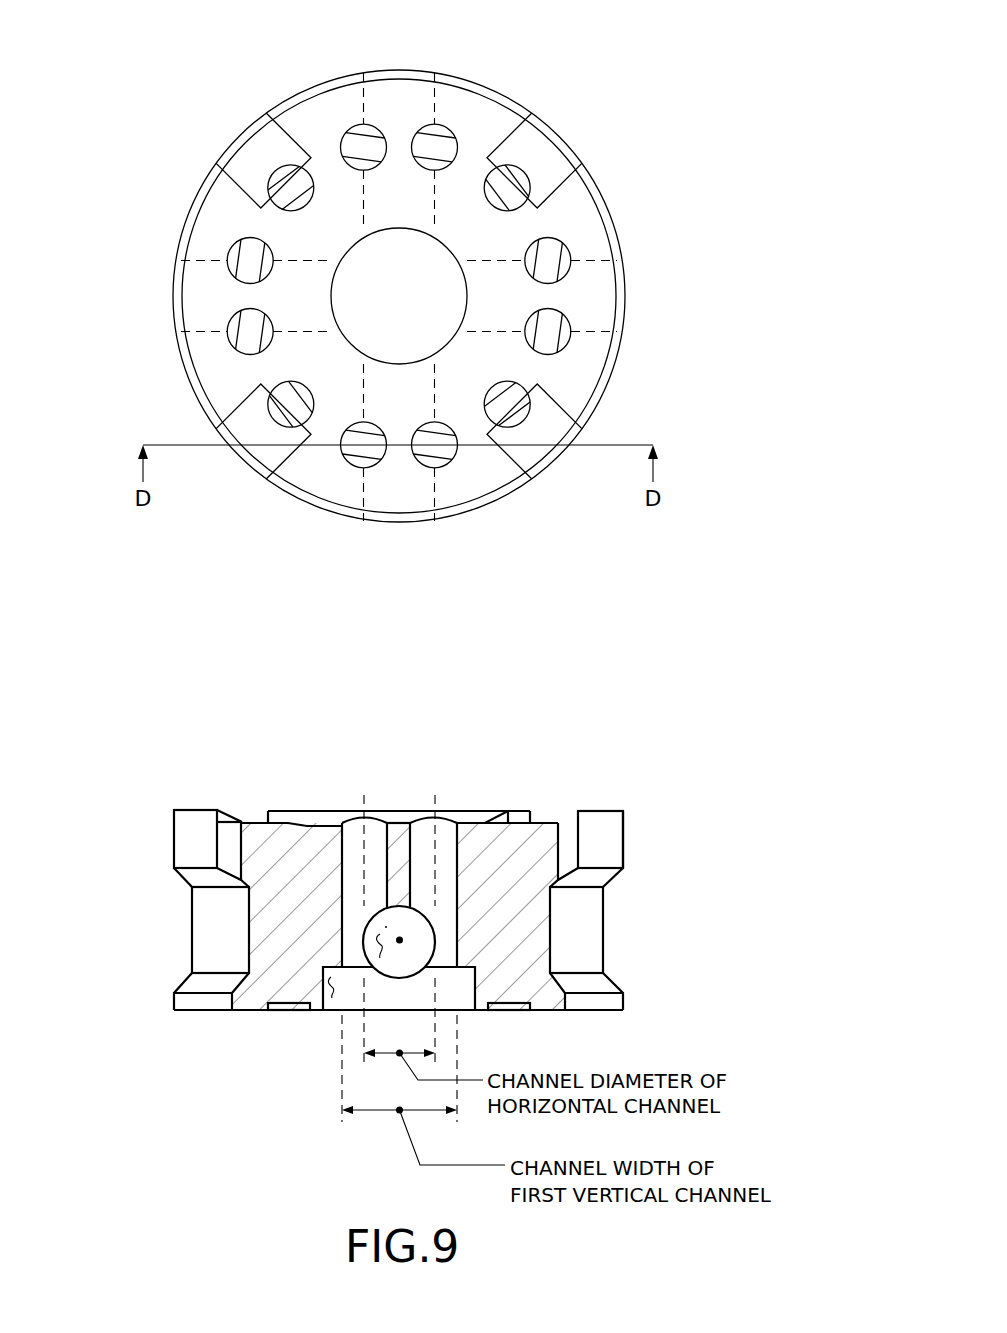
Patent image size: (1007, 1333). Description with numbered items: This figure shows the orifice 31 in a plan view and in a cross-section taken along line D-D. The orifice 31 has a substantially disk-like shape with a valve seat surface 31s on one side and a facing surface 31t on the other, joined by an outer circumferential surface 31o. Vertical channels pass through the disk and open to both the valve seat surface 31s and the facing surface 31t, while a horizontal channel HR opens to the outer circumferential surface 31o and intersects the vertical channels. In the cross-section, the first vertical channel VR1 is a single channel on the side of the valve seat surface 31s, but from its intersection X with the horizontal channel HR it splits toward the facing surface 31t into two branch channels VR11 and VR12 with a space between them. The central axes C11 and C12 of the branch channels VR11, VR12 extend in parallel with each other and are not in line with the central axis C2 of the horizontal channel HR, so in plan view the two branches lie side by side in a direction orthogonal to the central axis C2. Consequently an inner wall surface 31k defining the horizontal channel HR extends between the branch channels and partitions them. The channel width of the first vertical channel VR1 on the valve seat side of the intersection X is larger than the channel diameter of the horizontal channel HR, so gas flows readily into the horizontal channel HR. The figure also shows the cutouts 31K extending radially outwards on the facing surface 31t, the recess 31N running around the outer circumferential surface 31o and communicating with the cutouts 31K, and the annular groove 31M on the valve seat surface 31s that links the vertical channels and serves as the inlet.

The orifice 31 is at (172, 59).
The cutouts 31K is at (218, 810).
The facing surface 31t is at (310, 813).
The outer circumferential surface 31o is at (627, 825).
The recess 31N is at (608, 946).
The annular groove 31M is at (322, 982).
The valve seat surface 31s is at (317, 1011).
The inner wall surface 31k is at (398, 904).
The first vertical channel VR1 is at (399, 806).
The branch channel VR12 is at (347, 820).
The branch channel VR11 is at (448, 821).
The horizontal channel HR is at (377, 947).
The central axis C12 is at (364, 861).
The central axis C11 is at (433, 843).
The central axis C2 is at (400, 940).
The intersection X is at (378, 926).